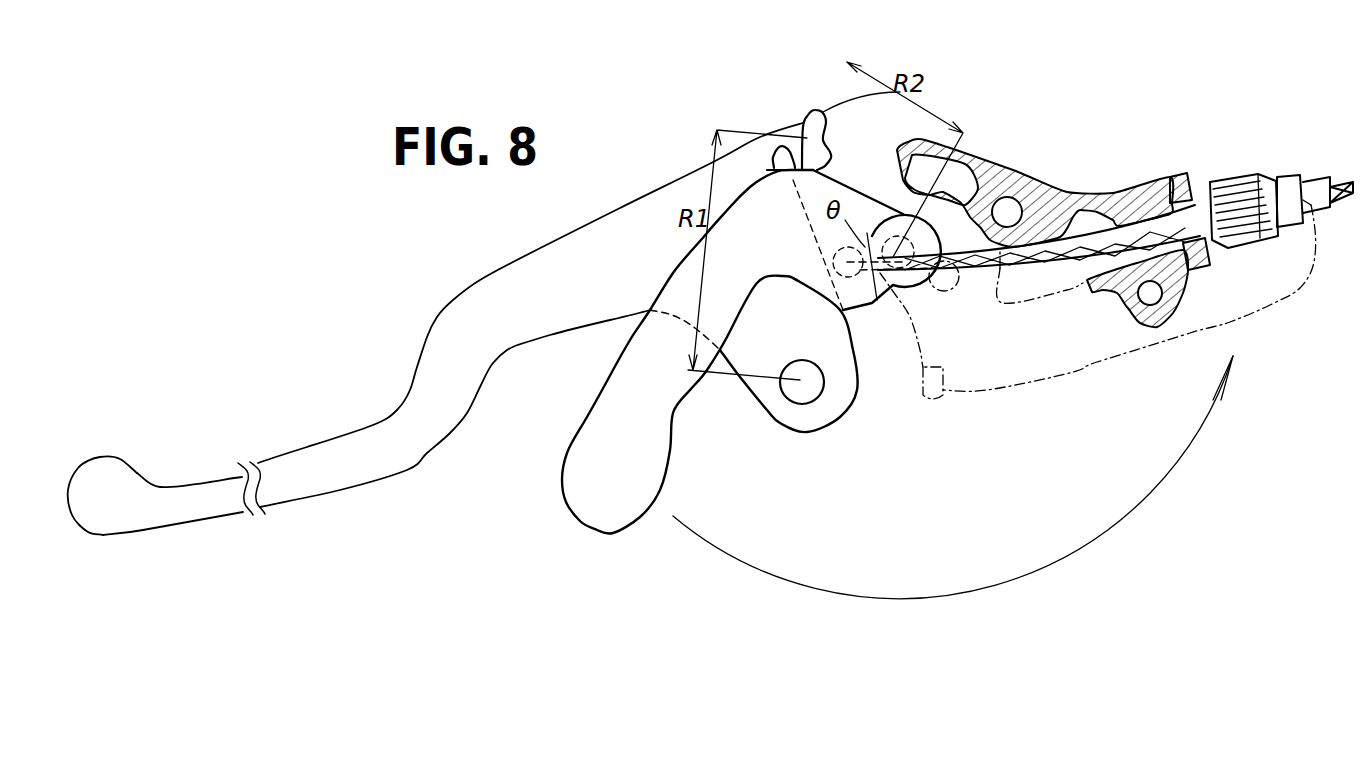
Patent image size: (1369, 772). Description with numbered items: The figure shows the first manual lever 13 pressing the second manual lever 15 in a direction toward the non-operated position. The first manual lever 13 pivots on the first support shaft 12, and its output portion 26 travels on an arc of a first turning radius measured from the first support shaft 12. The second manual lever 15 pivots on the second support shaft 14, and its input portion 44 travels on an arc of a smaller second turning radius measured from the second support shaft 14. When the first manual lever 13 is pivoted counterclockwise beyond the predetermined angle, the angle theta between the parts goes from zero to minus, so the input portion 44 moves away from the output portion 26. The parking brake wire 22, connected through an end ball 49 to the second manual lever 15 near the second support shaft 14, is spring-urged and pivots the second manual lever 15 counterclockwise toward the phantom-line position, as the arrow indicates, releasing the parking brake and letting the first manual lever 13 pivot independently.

The first support shaft 12 is at (808, 396).
The first manual lever 13 is at (372, 425).
The second support shaft 14 is at (882, 235).
The second manual lever 15 is at (565, 495).
The parking brake wire 22 is at (1053, 262).
The output portion 26 is at (783, 160).
The input portion 44 is at (784, 142).
The end ball 49 is at (862, 270).